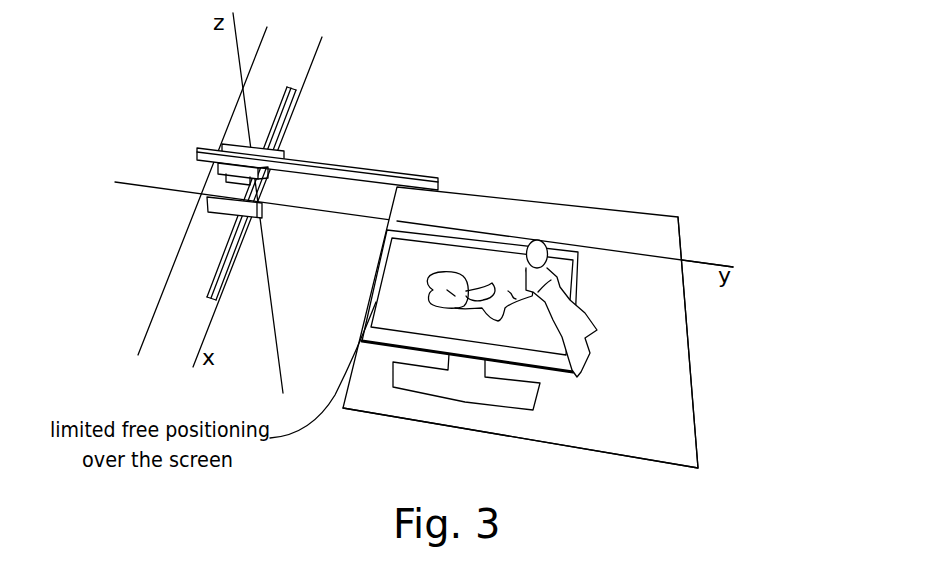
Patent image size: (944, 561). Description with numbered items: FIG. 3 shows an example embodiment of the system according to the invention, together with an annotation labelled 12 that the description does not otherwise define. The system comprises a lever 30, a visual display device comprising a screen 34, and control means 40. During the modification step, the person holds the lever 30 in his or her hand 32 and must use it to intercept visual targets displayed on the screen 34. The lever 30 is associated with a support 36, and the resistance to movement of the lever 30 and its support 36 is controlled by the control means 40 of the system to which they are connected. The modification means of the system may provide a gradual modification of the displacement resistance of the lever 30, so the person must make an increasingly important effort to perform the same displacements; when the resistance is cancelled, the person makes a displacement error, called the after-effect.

The haptic feedback handlet fixed to vision plate 12 is at (548, 243).
The lever 30 is at (538, 240).
The hand 32 is at (578, 262).
The screen 34 is at (427, 286).
The support 36 is at (668, 365).
The control means 40 is at (210, 149).